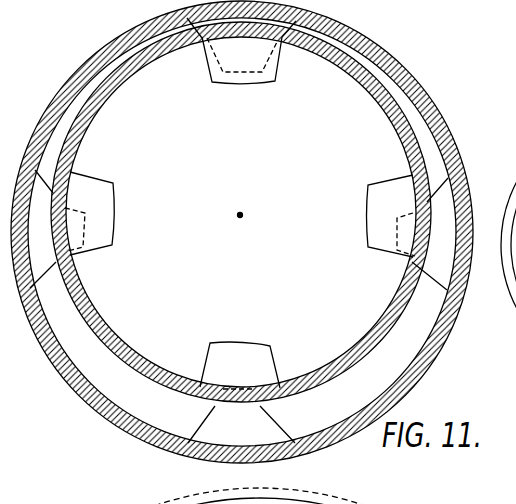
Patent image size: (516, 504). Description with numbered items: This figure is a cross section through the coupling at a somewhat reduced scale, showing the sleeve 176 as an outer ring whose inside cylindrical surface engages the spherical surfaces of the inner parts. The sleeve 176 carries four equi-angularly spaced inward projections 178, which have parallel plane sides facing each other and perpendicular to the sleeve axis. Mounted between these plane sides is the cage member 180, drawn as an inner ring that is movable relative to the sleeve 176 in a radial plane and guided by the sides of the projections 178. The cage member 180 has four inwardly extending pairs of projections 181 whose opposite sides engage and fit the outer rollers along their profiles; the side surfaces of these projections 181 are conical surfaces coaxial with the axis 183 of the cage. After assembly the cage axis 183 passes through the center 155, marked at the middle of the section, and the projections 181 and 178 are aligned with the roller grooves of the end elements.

The sleeve 176 is at (418, 370).
The cage member 180 is at (350, 358).
The inward projections of the sleeve 178 is at (270, 428).
The inwardly extending projections of the cage 181 is at (265, 78).
The center 155 is at (282, 205).
The axis of the cage 183 is at (240, 215).